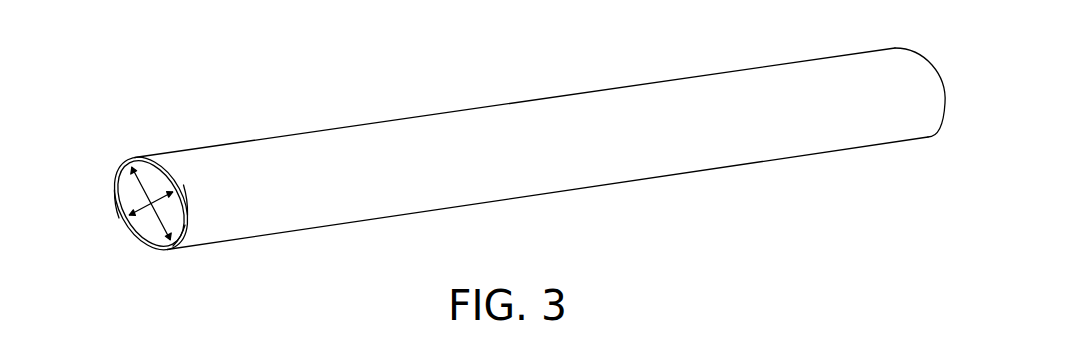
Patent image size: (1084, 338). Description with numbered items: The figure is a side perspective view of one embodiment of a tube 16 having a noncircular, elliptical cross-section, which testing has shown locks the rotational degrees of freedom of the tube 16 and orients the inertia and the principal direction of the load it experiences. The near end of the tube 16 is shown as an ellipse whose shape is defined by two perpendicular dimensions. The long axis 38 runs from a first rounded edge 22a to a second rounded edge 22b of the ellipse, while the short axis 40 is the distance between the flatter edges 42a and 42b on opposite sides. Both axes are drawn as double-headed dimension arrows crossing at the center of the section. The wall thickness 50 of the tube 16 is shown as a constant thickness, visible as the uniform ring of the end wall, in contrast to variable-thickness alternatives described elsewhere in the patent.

The tube 16 is at (516, 127).
The first rounded edge 22a is at (131, 160).
The second rounded edge 22b is at (175, 248).
The long axis 38 is at (154, 203).
The short axis 40 is at (155, 198).
The flatter edge 42a is at (116, 196).
The flatter edge 42b is at (184, 193).
The wall thickness 50 is at (186, 234).